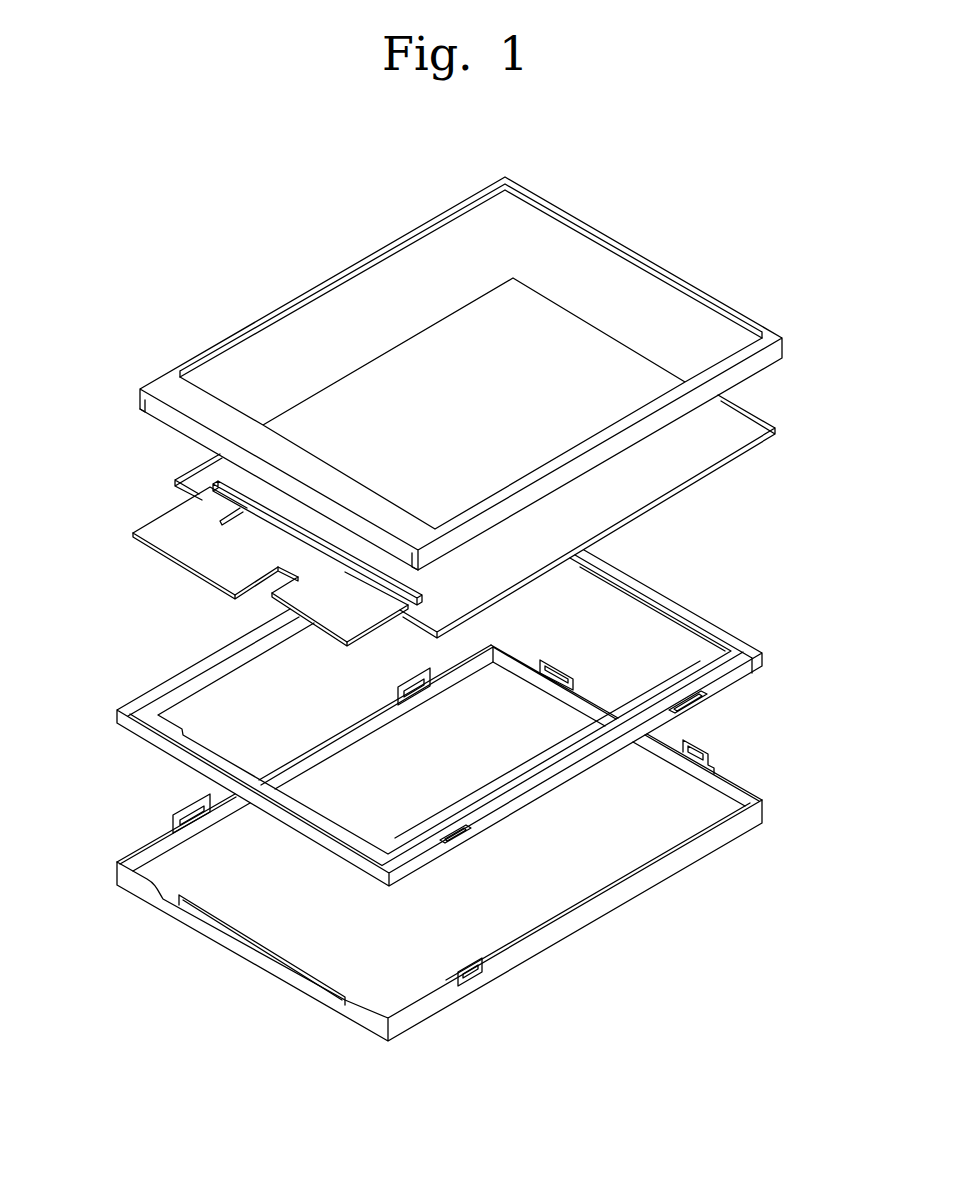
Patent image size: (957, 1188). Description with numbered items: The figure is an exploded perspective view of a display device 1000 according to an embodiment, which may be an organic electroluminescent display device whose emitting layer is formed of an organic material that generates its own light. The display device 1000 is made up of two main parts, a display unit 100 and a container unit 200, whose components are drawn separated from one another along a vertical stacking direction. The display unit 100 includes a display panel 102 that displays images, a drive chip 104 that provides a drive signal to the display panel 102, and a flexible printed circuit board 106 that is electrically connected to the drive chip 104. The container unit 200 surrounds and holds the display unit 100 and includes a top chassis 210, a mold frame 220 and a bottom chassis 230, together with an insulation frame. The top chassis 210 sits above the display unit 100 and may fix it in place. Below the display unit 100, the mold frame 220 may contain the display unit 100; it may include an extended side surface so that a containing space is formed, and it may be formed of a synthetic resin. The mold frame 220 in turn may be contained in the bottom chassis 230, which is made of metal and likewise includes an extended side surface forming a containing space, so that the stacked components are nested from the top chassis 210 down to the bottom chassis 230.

The display device 1000 is at (352, 180).
The display unit 100 is at (68, 452).
The display panel 102 is at (223, 457).
The drive chip 104 is at (267, 523).
The flexible printed circuit board 106 is at (160, 523).
The container unit 200 is at (851, 341).
The top chassis 210 is at (745, 347).
The mold frame 220 is at (762, 655).
The bottom chassis 230 is at (757, 810).